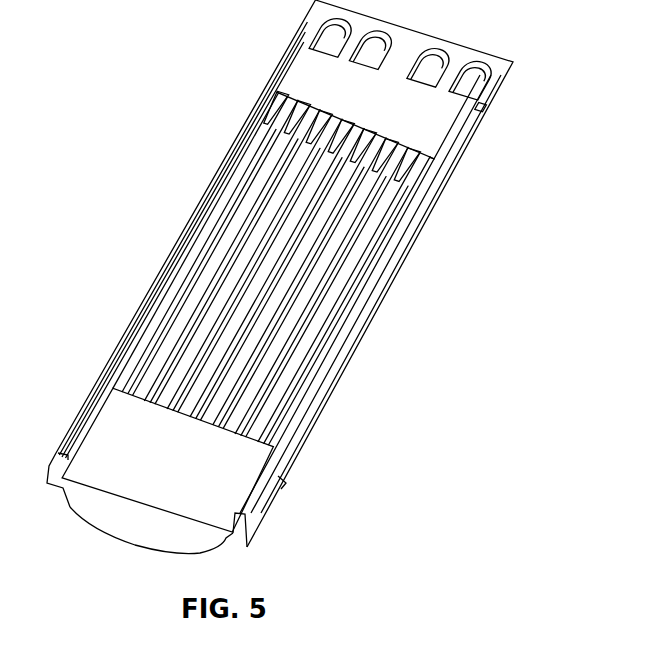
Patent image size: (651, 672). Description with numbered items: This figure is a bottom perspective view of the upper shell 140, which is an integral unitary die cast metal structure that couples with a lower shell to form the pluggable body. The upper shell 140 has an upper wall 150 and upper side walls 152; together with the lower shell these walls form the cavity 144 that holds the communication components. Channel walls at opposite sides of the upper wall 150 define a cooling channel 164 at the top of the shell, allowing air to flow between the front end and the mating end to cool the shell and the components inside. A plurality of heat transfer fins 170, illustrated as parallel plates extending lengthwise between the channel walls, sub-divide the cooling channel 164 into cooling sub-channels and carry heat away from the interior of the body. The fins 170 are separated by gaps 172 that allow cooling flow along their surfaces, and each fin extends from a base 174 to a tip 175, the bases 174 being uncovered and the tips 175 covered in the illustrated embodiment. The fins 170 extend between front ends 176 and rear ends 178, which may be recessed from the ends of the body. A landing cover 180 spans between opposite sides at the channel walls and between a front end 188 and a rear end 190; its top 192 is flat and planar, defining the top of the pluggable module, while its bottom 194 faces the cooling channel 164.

The upper shell 140 is at (497, 217).
The cavity 144 is at (196, 249).
The upper wall 150 is at (402, 62).
The upper side walls 152 is at (157, 290).
The cooling channel 164 is at (294, 144).
The heat transfer fins 170 is at (326, 258).
The gaps 172 is at (333, 236).
The bases 174 is at (253, 361).
The tips 175 is at (243, 383).
The front ends 176 is at (398, 155).
The rear ends 178 is at (116, 388).
The landing cover 180 is at (163, 364).
The front end 188 is at (288, 490).
The rear end 190 is at (378, 139).
The top 192 is at (311, 460).
The bottom 194 is at (255, 430).